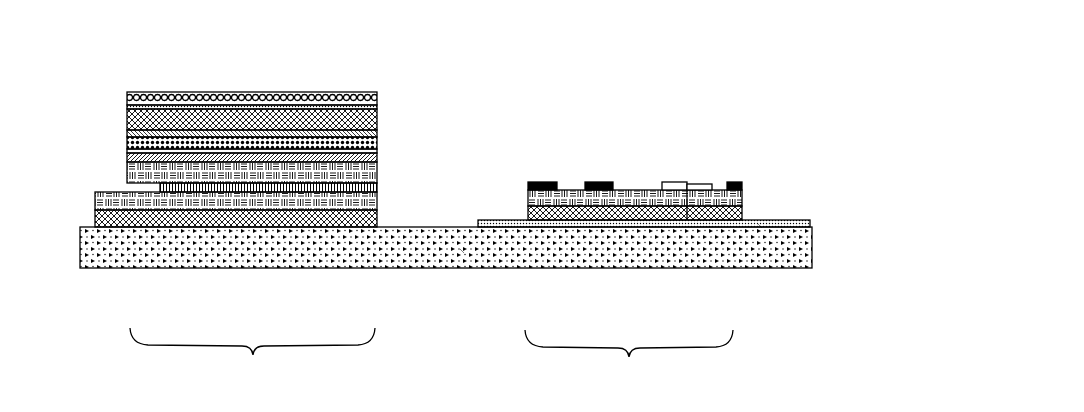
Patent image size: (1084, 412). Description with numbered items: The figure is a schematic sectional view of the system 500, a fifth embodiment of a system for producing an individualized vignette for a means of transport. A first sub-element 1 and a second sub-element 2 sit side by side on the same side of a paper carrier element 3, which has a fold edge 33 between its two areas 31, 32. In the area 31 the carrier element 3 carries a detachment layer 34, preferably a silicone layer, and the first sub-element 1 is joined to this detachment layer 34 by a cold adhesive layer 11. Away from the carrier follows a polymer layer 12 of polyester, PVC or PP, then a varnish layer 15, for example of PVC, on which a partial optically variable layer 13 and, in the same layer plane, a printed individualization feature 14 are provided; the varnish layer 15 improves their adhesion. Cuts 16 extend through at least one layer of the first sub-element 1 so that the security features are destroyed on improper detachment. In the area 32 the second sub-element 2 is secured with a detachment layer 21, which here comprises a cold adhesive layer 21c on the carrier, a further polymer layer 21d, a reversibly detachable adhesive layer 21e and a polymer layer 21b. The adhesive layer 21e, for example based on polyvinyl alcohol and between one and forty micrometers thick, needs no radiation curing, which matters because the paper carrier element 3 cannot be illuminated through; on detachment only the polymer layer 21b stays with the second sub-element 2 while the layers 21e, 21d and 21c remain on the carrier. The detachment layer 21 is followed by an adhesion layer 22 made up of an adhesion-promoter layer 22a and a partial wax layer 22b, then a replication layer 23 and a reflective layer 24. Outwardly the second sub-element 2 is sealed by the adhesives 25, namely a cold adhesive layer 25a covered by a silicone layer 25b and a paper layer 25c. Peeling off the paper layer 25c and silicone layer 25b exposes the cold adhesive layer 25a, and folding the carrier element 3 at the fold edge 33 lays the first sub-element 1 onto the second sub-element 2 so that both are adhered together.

The system 500 is at (588, 60).
The first sub-element 1 is at (748, 110).
The second sub-element 2 is at (122, 72).
The carrier element 3 is at (786, 252).
The cold adhesive layer 11 is at (745, 222).
The polymer layer 12 is at (745, 208).
The partial optically variable layer 13 is at (676, 182).
The individualization feature 14 is at (598, 182).
The varnish layer 15 is at (745, 192).
The cuts 16 is at (699, 183).
The detachment layer 21 is at (92, 163).
The polymer layer 21b is at (219, 165).
The cold adhesive layer 21c is at (292, 216).
The further polymer layer 21d is at (350, 205).
The reversibly detachable adhesive layer 21e is at (198, 188).
The adhesion layer 22 is at (123, 155).
The adhesion-promoter layer 22a is at (378, 150).
The partial wax layer 22b is at (378, 160).
The replication layer 23 is at (378, 145).
The reflective layer 24 is at (378, 138).
The adhesives 25 is at (122, 92).
The cold adhesive layer 25a is at (173, 122).
The silicone layer 25b is at (249, 106).
The paper layer 25c is at (330, 98).
The area 31 is at (629, 360).
The area 32 is at (252, 357).
The fold edge 33 is at (462, 252).
The detachment layer 34 is at (760, 226).